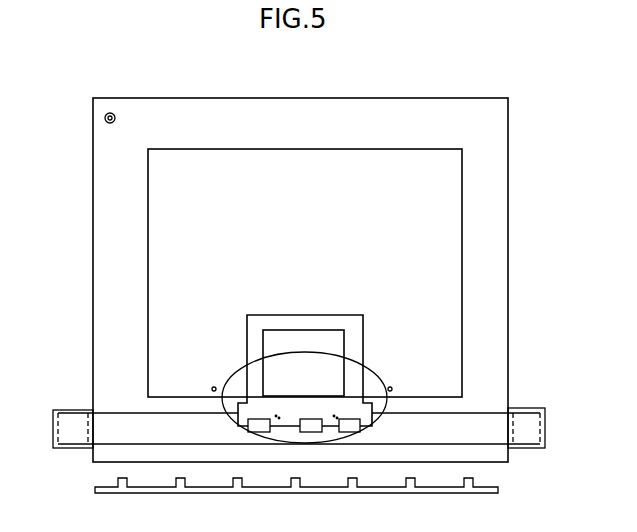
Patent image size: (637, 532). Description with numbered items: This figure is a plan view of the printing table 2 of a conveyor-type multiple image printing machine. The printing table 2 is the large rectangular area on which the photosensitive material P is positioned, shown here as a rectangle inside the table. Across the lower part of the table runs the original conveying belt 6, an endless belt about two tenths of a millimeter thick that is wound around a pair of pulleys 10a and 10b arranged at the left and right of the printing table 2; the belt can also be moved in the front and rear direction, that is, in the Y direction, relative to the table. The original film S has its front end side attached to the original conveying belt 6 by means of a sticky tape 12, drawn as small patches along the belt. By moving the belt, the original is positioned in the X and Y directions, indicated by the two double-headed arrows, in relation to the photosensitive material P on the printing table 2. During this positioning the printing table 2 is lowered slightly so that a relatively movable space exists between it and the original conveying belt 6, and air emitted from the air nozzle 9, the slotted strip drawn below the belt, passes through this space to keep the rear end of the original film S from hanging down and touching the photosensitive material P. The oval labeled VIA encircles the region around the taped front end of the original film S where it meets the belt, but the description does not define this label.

The printing table 2 is at (502, 242).
The photosensitive material P is at (330, 148).
The X direction X is at (357, 248).
The Y direction Y is at (399, 173).
The original film S is at (305, 314).
The sticky tape 12 is at (309, 419).
The via area VIA is at (378, 366).
The original conveying belt 6 is at (479, 411).
The pulley 10a is at (74, 450).
The pulley 10b is at (530, 450).
The air nozzle 9 is at (297, 486).